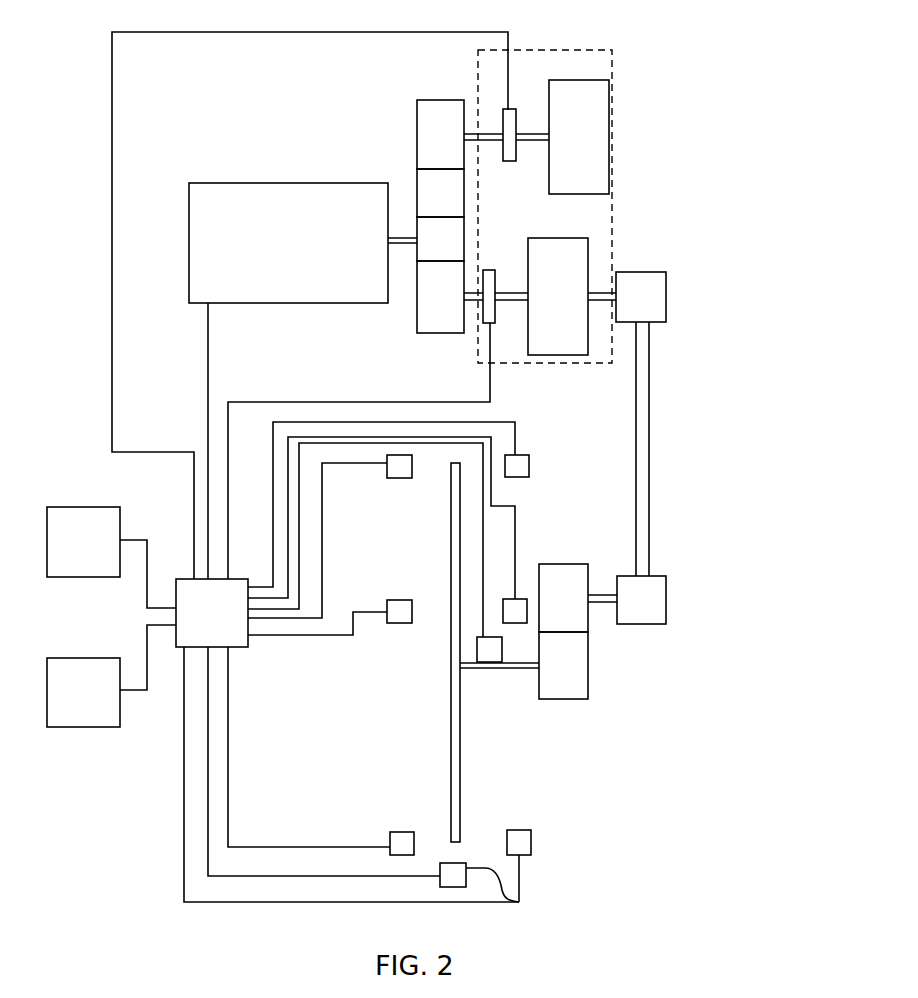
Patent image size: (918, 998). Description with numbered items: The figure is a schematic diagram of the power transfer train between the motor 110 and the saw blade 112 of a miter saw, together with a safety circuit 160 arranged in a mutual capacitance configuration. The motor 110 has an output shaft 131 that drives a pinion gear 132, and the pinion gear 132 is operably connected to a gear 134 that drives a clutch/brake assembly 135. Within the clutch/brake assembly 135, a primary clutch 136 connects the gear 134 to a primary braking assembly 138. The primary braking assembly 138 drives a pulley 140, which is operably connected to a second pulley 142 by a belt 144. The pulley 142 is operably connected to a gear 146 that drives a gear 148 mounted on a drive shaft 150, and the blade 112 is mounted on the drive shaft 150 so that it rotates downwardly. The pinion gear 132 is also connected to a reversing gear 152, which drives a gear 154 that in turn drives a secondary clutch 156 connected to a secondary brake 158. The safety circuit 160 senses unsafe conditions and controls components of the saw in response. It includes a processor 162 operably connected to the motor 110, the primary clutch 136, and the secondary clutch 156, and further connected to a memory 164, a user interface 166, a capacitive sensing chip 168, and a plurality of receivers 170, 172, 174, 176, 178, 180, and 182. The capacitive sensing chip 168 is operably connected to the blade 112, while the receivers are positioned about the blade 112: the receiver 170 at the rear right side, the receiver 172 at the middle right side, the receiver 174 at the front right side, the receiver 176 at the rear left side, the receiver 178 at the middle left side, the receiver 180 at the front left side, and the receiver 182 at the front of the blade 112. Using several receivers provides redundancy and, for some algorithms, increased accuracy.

The motor 110 is at (205, 183).
The saw blade 112 is at (460, 766).
The output shaft 131 is at (395, 238).
The pinion gear 132 is at (457, 237).
The gear 134 is at (417, 333).
The clutch/brake assembly 135 is at (612, 50).
The primary clutch 136 is at (484, 323).
The primary braking assembly 138 is at (557, 238).
The pulley 140 is at (666, 292).
The pulley 142 is at (655, 594).
The belt 144 is at (642, 396).
The gear 146 is at (552, 575).
The gear 148 is at (583, 680).
The drive shaft 150 is at (516, 668).
The reversing gear 152 is at (460, 198).
The gear 154 is at (417, 121).
The secondary clutch 156 is at (510, 109).
The secondary brake 158 is at (601, 148).
The safety circuit 160 is at (172, 716).
The processor 162 is at (248, 647).
The memory 164 is at (101, 727).
The user interface 166 is at (61, 507).
The capacitive sensing chip 168 is at (477, 655).
The receiver 170 is at (529, 465).
The receiver 172 is at (505, 612).
The receiver 174 is at (531, 845).
The receiver 176 is at (405, 478).
The receiver 178 is at (395, 623).
The receiver 180 is at (392, 832).
The receiver 182 is at (508, 900).